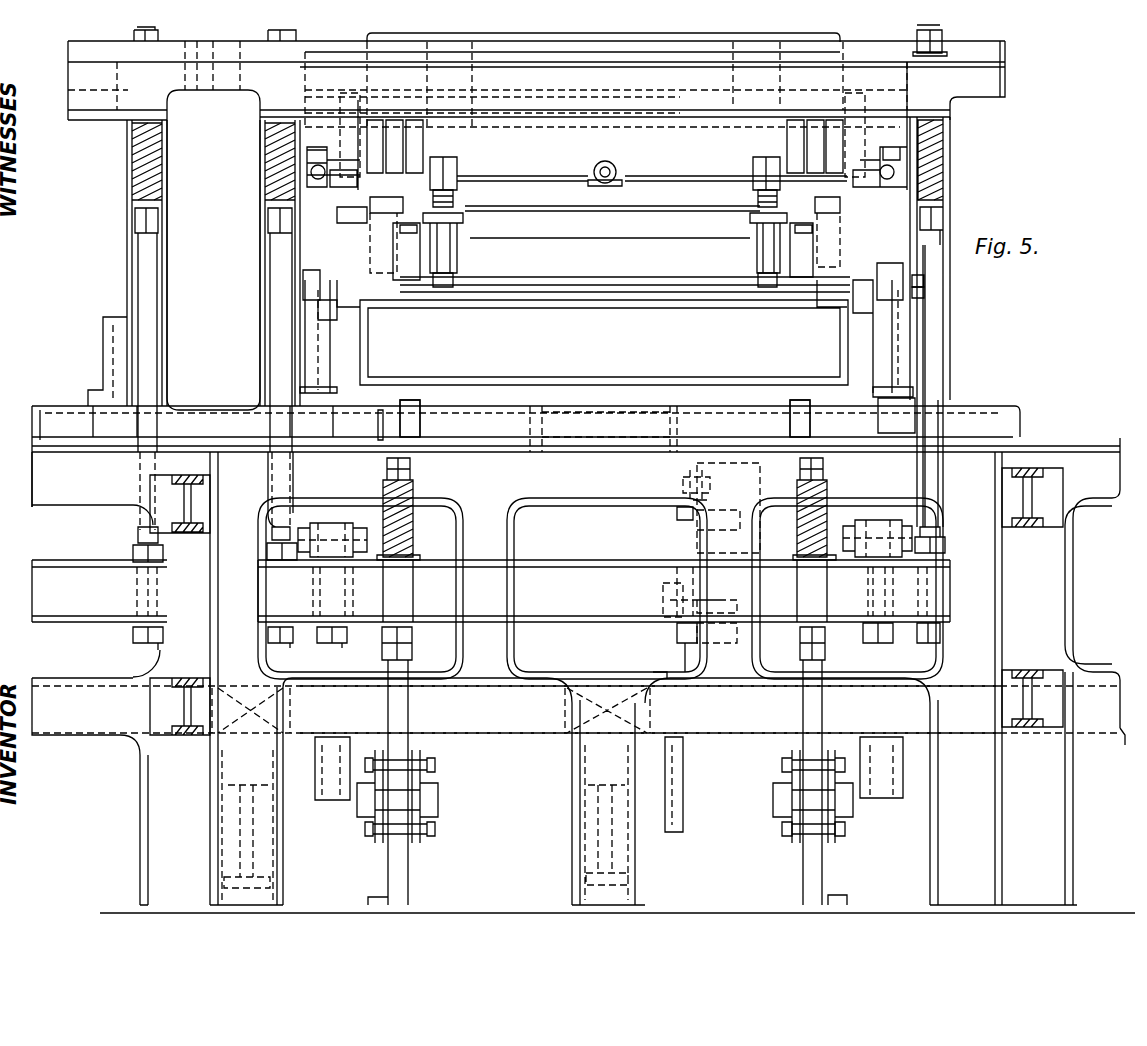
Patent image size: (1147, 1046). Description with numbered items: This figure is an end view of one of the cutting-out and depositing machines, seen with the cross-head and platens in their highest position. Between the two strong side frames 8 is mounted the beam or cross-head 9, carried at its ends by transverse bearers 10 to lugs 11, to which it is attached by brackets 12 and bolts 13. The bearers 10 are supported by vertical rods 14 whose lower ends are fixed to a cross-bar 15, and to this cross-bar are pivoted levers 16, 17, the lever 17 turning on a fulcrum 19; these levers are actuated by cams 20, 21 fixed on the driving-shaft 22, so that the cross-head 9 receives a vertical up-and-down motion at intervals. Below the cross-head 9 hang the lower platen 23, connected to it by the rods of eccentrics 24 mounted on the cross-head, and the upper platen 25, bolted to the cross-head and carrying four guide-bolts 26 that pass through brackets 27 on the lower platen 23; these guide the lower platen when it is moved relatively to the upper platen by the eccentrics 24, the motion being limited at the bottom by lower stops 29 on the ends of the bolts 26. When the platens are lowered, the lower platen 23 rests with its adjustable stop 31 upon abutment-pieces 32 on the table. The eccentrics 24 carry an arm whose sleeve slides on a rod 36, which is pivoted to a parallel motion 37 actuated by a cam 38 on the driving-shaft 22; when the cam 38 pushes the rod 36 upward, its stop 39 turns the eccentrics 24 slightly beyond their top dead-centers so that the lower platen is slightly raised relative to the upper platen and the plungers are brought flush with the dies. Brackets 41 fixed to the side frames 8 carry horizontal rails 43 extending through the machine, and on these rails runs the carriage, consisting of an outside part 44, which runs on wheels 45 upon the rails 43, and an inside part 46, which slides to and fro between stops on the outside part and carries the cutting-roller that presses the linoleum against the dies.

The side frame 8 is at (583, 675).
The cross-head 9 is at (622, 38).
The transverse bearer 10 is at (536, 84).
The lug 11 is at (602, 135).
The bracket 12 is at (619, 146).
The bolt 13 is at (445, 160).
The vertical rod 14 is at (150, 310).
The cross-bar 15 is at (491, 605).
The lever 16 is at (605, 538).
The lever 17 is at (425, 770).
The fulcrum 19 is at (424, 835).
The cam 20 is at (418, 660).
The cam 21 is at (600, 665).
The driving-shaft 22 is at (498, 693).
The lower platen 23 is at (625, 265).
The eccentric 24 is at (352, 150).
The upper platen 25 is at (652, 179).
The guide-bolt 26 is at (454, 200).
The bracket 27 is at (458, 235).
The lower stop 29 is at (458, 276).
The adjustable stop 31 is at (398, 232).
The abutment-piece 32 is at (418, 400).
The rod 36 is at (935, 383).
The parallel motion 37 is at (683, 522).
The cam 38 is at (672, 652).
The stop 39 is at (935, 285).
The bracket 41 is at (170, 92).
The horizontal rail 43 is at (606, 343).
The outside part of carriage 44 is at (598, 336).
The wheel 45 is at (601, 269).
The inside part of carriage 46 is at (365, 315).